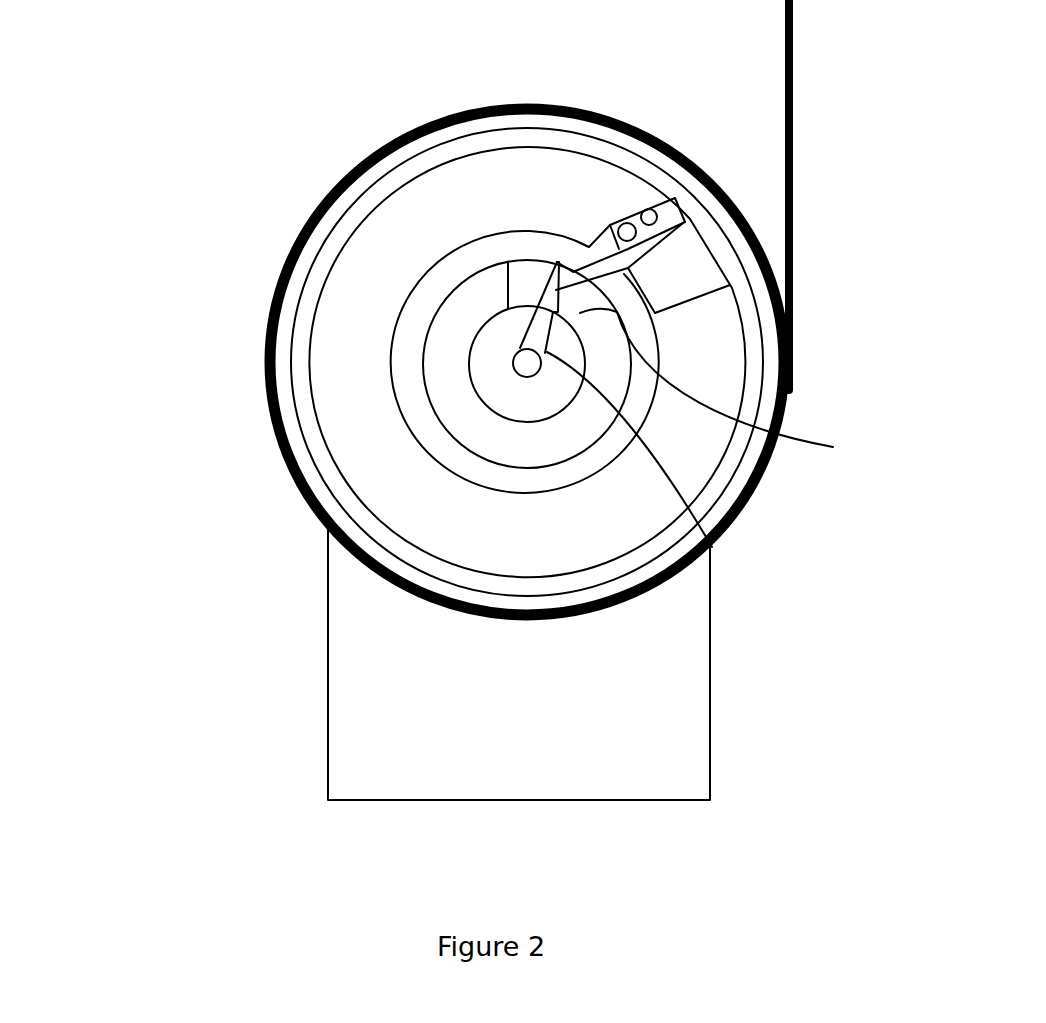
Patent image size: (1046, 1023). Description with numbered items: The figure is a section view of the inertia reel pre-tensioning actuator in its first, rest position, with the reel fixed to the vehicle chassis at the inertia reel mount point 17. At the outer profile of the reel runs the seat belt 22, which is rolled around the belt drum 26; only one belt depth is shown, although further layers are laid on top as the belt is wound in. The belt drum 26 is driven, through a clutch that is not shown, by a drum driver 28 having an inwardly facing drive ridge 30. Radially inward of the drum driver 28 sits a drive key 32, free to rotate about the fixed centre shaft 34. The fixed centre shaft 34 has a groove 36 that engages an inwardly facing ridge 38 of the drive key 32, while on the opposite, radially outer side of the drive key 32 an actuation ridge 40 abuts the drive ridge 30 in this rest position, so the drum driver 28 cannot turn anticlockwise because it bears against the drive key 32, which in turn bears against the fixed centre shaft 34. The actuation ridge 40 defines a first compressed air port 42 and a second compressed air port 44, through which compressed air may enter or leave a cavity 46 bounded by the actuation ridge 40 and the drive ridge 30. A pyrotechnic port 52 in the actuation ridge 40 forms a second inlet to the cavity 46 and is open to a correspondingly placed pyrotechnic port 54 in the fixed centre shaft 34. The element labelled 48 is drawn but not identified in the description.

The inertia reel mount point 17 is at (525, 729).
The seat belt 22 is at (793, 122).
The belt drum 26 is at (772, 362).
The drum driver 28 is at (430, 148).
The drive ridge 30 is at (697, 288).
The drive key 32 is at (440, 273).
The fixed centre shaft 34 is at (485, 380).
The groove 36 is at (515, 289).
The inwardly facing ridge 38 is at (724, 386).
The actuation ridge 40 is at (640, 197).
The first compressed air port 42 is at (650, 213).
The second compressed air port 44 is at (623, 223).
The cavity 46 is at (687, 222).
The ring 48 is at (393, 503).
The pyrotechnic port 52 is at (573, 273).
The pyrotechnic port 54 is at (713, 545).